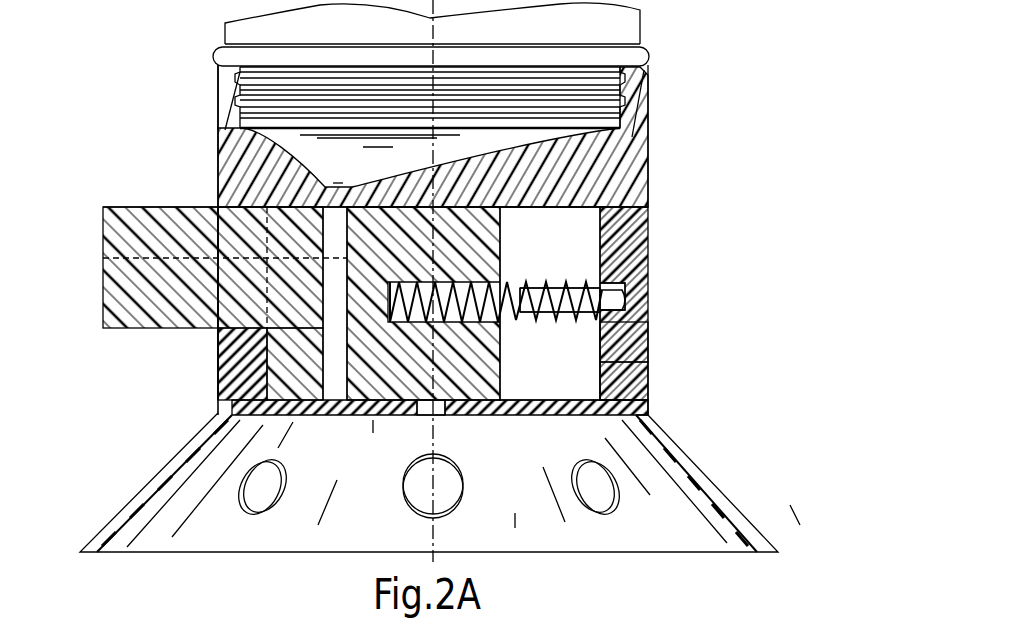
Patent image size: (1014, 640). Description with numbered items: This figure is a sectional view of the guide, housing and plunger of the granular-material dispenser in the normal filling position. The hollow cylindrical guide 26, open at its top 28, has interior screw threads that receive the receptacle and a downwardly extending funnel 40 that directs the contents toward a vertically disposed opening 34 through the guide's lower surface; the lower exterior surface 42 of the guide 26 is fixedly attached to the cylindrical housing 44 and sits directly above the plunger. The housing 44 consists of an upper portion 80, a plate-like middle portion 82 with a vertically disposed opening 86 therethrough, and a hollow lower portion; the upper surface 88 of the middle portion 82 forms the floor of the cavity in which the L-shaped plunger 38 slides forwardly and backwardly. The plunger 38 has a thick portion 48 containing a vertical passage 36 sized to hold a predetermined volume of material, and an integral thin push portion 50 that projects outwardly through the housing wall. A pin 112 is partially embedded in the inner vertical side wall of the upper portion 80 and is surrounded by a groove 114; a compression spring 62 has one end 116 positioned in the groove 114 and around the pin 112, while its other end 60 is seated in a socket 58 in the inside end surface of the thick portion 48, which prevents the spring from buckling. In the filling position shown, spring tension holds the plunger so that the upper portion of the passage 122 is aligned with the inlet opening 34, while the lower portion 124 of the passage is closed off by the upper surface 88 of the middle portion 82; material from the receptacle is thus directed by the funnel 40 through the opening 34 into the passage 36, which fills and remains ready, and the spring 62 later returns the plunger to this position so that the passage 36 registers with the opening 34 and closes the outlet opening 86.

The guide 26 is at (587, 177).
The top 28 is at (232, 50).
The opening 34 is at (220, 164).
The passage 36 is at (235, 348).
The plunger 38 is at (338, 233).
The funnel 40 is at (343, 171).
The lower exterior surface 42 is at (600, 213).
The housing 44 is at (643, 362).
The thick portion 48 is at (477, 417).
The push portion 50 is at (125, 290).
The socket 58 is at (460, 275).
The end of compression spring 60 is at (440, 315).
The compression spring 62 is at (563, 280).
The upper portion 80 is at (643, 330).
The middle portion 82 is at (402, 420).
The opening 86 is at (435, 418).
The upper surface 88 is at (627, 400).
The pin 112 is at (627, 249).
The groove 114 is at (605, 290).
The end of compression spring 116 is at (640, 307).
The upper portion of the passage 122 is at (247, 245).
The lower portion of the passage 124 is at (225, 388).